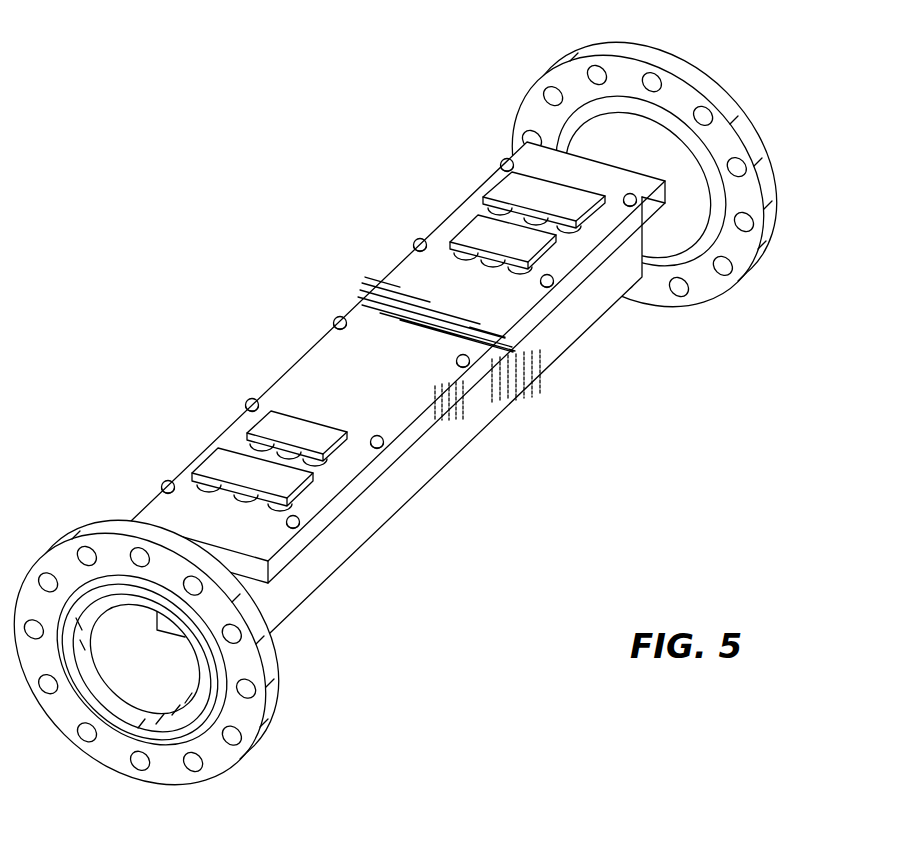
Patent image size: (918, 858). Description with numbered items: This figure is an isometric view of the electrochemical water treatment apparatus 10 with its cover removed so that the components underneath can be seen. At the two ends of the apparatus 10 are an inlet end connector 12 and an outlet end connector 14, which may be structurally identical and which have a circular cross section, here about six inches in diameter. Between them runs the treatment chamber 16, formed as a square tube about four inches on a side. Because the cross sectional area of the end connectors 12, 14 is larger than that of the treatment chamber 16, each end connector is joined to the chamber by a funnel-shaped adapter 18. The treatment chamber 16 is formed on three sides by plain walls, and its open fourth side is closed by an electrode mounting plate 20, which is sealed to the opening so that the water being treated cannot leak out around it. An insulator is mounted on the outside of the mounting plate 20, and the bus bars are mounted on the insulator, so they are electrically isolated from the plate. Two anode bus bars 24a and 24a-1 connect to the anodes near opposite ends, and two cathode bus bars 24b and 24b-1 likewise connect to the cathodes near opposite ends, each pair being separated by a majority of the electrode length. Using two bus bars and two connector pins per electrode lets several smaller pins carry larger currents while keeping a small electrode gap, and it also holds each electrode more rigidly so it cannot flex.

The water treatment apparatus 10 is at (413, 418).
The inlet end connector 12 is at (163, 766).
The outlet end connector 14 is at (750, 130).
The treatment chamber 16 is at (543, 372).
The adapter 18 is at (647, 143).
The electrode mounting plate 20 is at (368, 318).
The anode bus bar 24a is at (277, 417).
The cathode bus bar 24b is at (217, 468).
The anode bus bar 24a-1 is at (472, 233).
The cathode bus bar 24b-1 is at (508, 193).